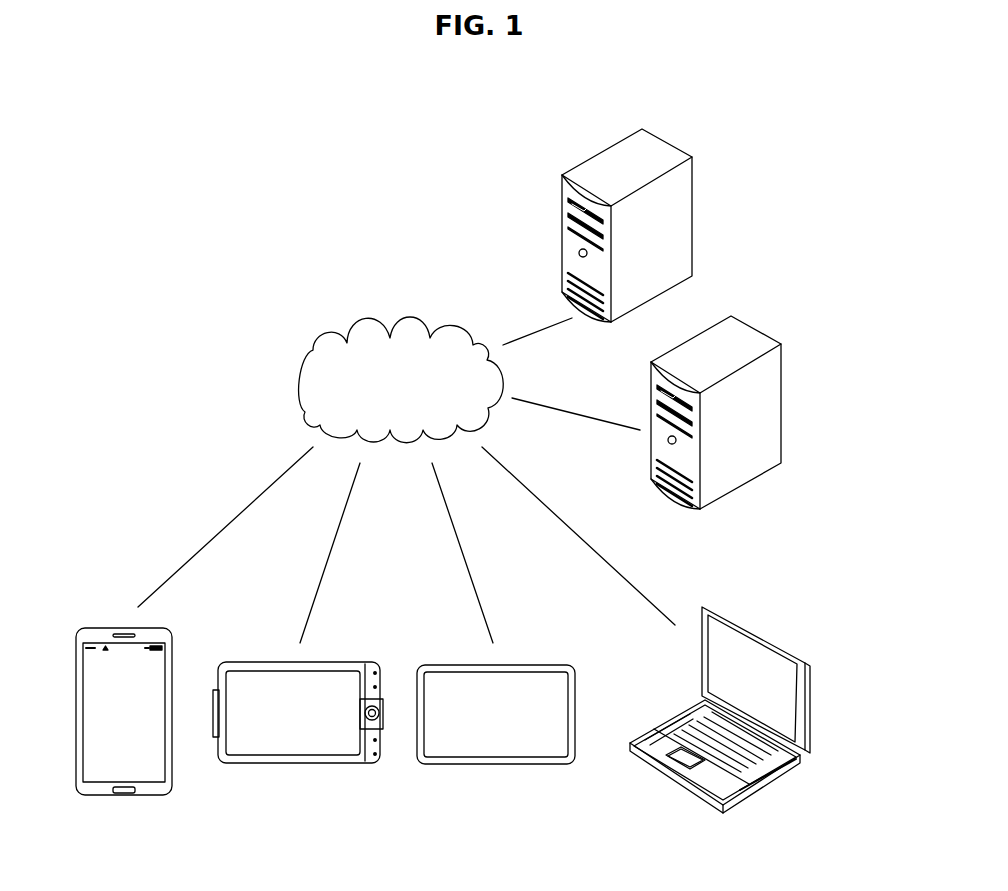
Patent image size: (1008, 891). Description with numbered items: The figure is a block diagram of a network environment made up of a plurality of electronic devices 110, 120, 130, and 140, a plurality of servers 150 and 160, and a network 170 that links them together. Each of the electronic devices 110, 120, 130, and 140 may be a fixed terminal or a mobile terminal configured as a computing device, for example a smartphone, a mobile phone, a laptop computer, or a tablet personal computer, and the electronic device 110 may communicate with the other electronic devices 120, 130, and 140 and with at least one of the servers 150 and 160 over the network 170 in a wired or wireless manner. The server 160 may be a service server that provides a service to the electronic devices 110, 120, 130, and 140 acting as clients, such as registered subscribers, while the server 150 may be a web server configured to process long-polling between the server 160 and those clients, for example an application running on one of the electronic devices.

The electronic device 110 is at (123, 797).
The electronic device 120 is at (298, 763).
The electronic device 130 is at (497, 764).
The electronic device 140 is at (805, 707).
The server 150 is at (780, 402).
The server 160 is at (692, 217).
The network 170 is at (403, 318).